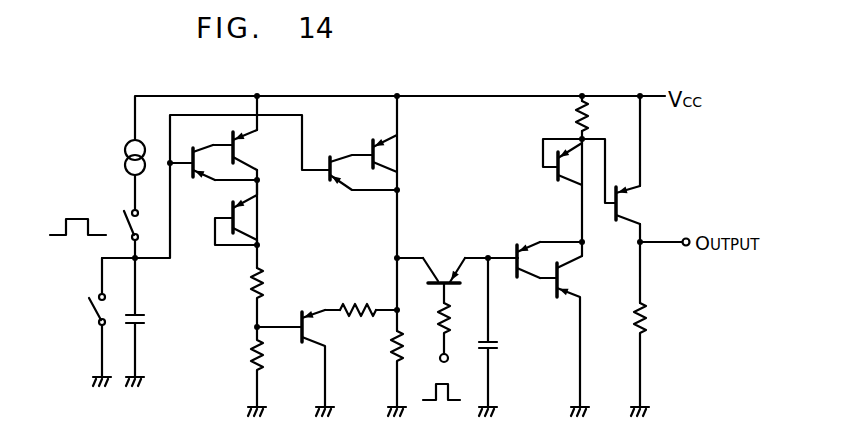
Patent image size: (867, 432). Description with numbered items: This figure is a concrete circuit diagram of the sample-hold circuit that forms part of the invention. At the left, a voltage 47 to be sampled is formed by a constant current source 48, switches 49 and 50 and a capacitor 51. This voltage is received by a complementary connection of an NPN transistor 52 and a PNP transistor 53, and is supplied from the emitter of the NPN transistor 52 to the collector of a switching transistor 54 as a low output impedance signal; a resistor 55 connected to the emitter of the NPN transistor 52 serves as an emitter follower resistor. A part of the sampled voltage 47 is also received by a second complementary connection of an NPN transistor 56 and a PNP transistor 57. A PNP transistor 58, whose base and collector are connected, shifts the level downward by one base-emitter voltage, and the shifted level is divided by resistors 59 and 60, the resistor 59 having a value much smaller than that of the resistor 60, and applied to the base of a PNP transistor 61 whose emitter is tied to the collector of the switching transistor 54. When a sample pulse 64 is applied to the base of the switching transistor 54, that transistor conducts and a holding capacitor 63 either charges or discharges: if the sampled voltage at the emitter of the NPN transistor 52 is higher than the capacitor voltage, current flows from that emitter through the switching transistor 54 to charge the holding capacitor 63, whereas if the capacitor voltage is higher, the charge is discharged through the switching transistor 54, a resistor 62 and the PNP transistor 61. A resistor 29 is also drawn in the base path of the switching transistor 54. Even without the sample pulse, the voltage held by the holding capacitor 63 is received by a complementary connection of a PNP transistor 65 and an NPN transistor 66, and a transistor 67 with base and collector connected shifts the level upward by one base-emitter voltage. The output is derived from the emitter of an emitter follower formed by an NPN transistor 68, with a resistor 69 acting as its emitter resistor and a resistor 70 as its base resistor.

The voltage to be sampled 47 is at (65, 221).
The constant current source 48 is at (124, 151).
The switch 49 is at (128, 206).
The switch 50 is at (89, 322).
The capacitor 51 is at (144, 323).
The NPN transistor 52 is at (333, 158).
The PNP transistor 53 is at (384, 153).
The switching transistor 54 is at (443, 268).
The resistor 55 is at (391, 357).
The NPN transistor 56 is at (199, 177).
The PNP transistor 57 is at (243, 146).
The PNP transistor 58 is at (244, 219).
The resistor 59 is at (256, 283).
The resistor 60 is at (254, 346).
The PNP transistor 61 is at (314, 329).
The resistor 62 is at (365, 307).
The holding capacitor 63 is at (499, 347).
The sample pulse 64 is at (449, 376).
The PNP transistor 65 is at (521, 247).
The NPN transistor 66 is at (566, 279).
The transistor 67 is at (565, 183).
The NPN transistor 68 is at (626, 204).
The resistor 69 is at (645, 321).
The resistor 70 is at (584, 118).
The resistor R29 29 is at (450, 332).